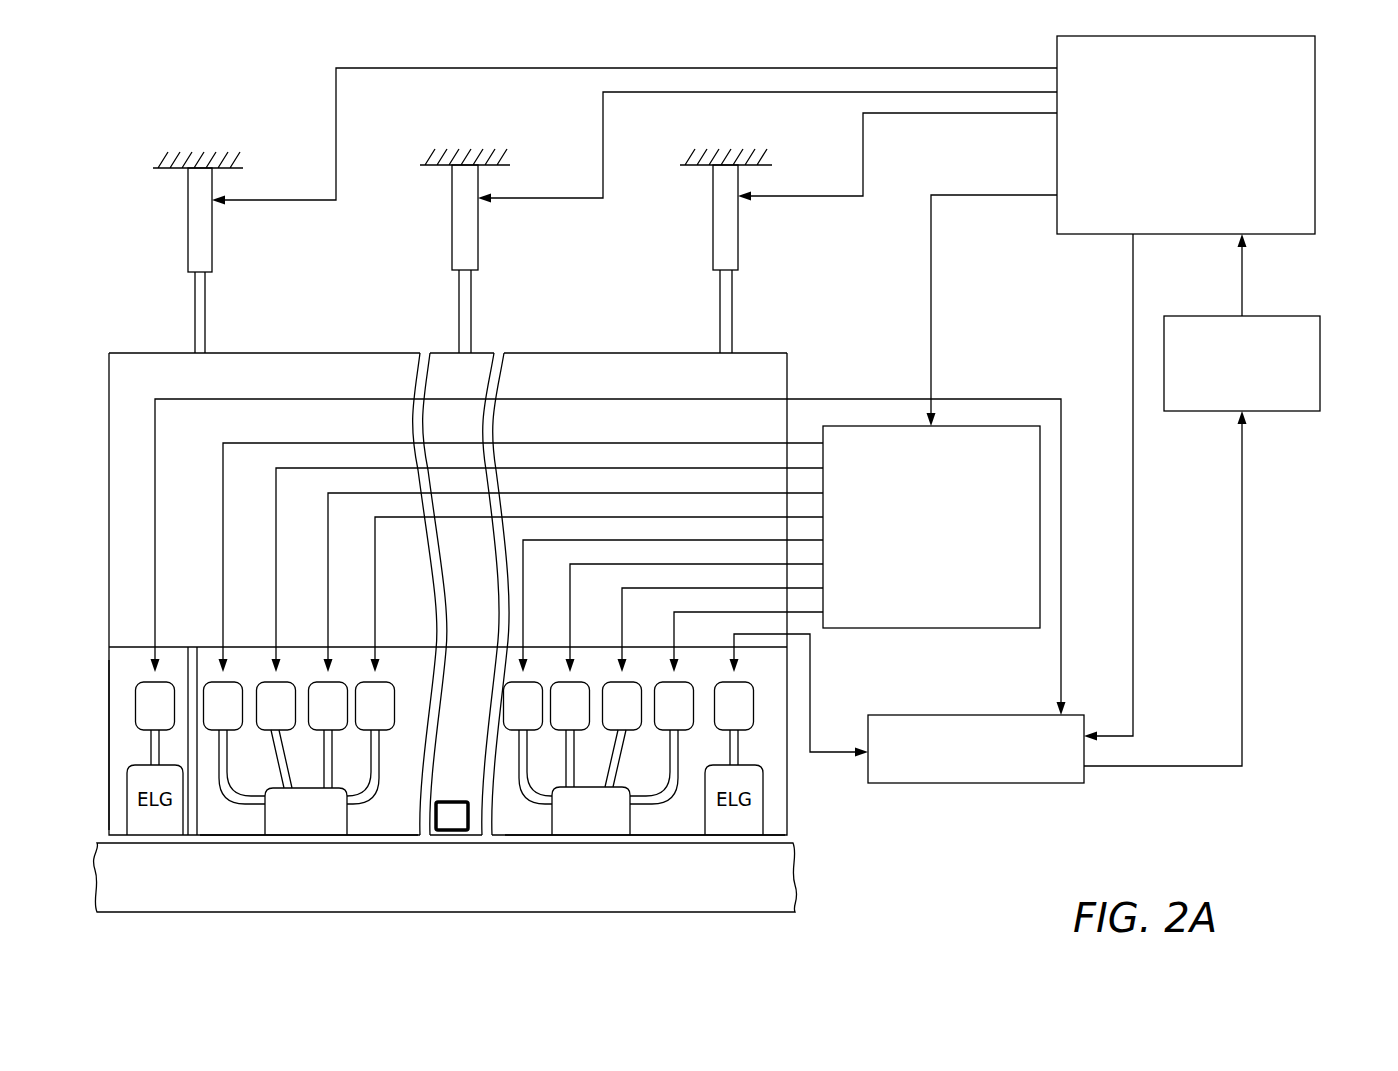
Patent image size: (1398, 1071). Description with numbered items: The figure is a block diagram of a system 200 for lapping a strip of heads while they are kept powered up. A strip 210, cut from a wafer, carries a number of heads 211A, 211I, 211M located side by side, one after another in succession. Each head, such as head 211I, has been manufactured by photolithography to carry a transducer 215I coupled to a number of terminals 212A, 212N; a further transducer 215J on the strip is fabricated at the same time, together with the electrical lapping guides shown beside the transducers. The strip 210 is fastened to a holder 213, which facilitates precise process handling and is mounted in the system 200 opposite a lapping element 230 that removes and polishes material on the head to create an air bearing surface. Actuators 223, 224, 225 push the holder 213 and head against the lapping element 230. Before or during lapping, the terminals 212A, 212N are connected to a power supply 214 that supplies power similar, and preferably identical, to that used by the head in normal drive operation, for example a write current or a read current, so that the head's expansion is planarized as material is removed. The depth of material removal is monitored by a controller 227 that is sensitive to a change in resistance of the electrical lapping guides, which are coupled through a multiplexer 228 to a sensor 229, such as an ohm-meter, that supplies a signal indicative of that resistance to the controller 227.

The system 200 is at (1322, 580).
The strip 210 is at (90, 792).
The head 211A is at (118, 671).
The head 211I is at (247, 682).
The head 211M is at (787, 811).
The terminal 212A is at (218, 686).
The terminal 212N is at (385, 688).
The holder 213 is at (219, 389).
The power supply 214 is at (1016, 628).
The transducer 215I is at (310, 823).
The transducer 215J is at (451, 821).
The actuator 223 is at (212, 243).
The actuator 224 is at (478, 241).
The actuator 225 is at (738, 241).
The controller 227 is at (1315, 193).
The multiplexer 228 is at (1064, 783).
The sensor 229 is at (1320, 391).
The lapping element 230 is at (795, 883).